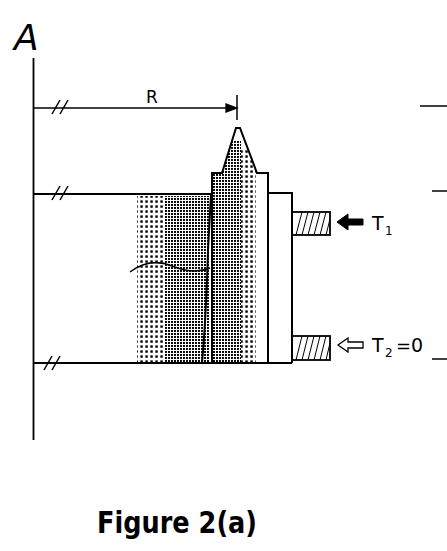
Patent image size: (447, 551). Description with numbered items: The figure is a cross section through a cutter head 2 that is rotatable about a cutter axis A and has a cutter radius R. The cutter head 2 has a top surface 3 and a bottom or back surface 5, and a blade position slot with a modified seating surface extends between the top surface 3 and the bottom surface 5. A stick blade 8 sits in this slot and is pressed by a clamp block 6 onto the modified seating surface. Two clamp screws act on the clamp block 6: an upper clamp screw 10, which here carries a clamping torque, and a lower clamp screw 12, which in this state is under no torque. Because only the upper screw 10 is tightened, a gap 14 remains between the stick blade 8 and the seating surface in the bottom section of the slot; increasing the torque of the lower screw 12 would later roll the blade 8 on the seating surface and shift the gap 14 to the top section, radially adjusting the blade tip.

The cutter head 2 is at (118, 340).
The top surface 3 is at (128, 194).
The bottom surface 5 is at (85, 363).
The clamp block 6 is at (282, 340).
The stick blade 8 is at (235, 340).
The upper clamp screw 10 is at (310, 212).
The lower clamp screw 12 is at (310, 360).
The gap 14 is at (204, 365).